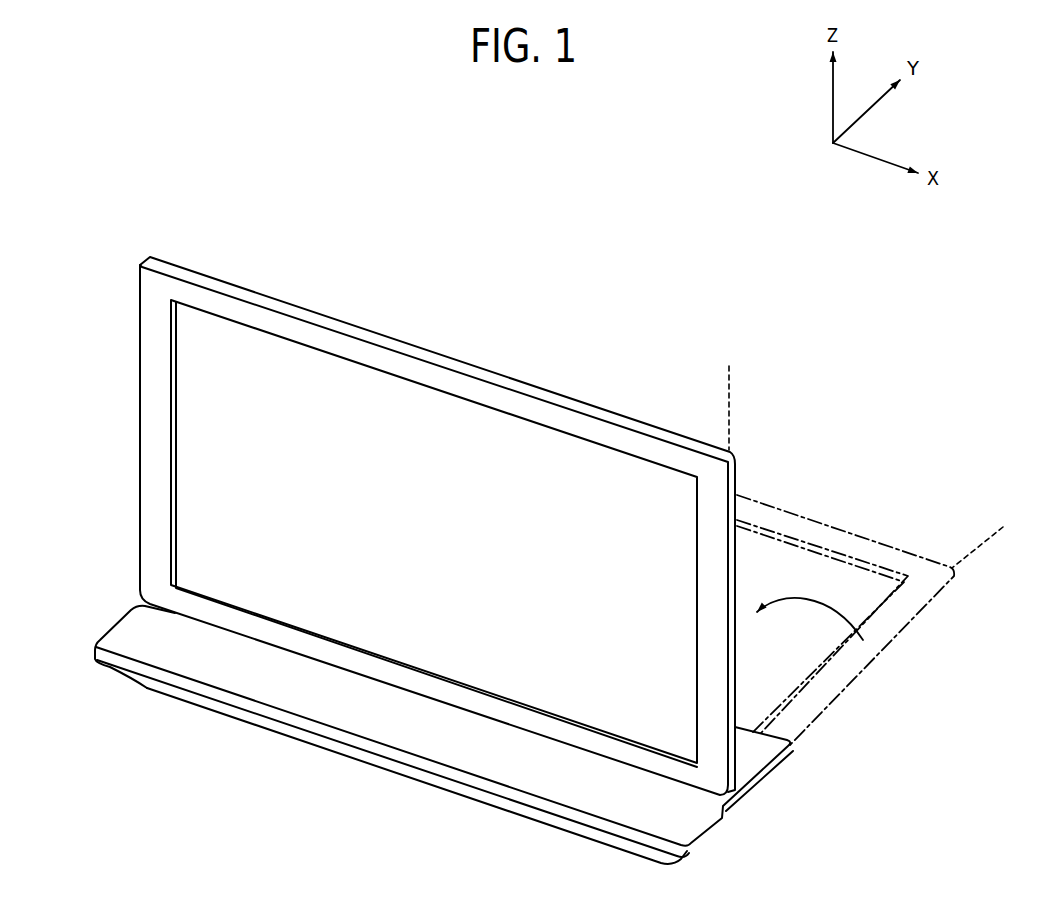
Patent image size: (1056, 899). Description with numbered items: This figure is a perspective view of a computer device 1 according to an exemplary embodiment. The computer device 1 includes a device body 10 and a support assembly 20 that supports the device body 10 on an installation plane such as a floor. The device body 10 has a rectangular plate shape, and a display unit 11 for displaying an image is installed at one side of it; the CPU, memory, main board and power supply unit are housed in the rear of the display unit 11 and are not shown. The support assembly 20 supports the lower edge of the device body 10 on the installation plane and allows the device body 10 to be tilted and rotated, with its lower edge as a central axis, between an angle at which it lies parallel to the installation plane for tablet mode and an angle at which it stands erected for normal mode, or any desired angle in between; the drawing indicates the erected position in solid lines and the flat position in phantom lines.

The computer device 1 is at (534, 253).
The device body 10 is at (118, 432).
The display unit 11 is at (285, 373).
The support assembly 20 is at (102, 618).